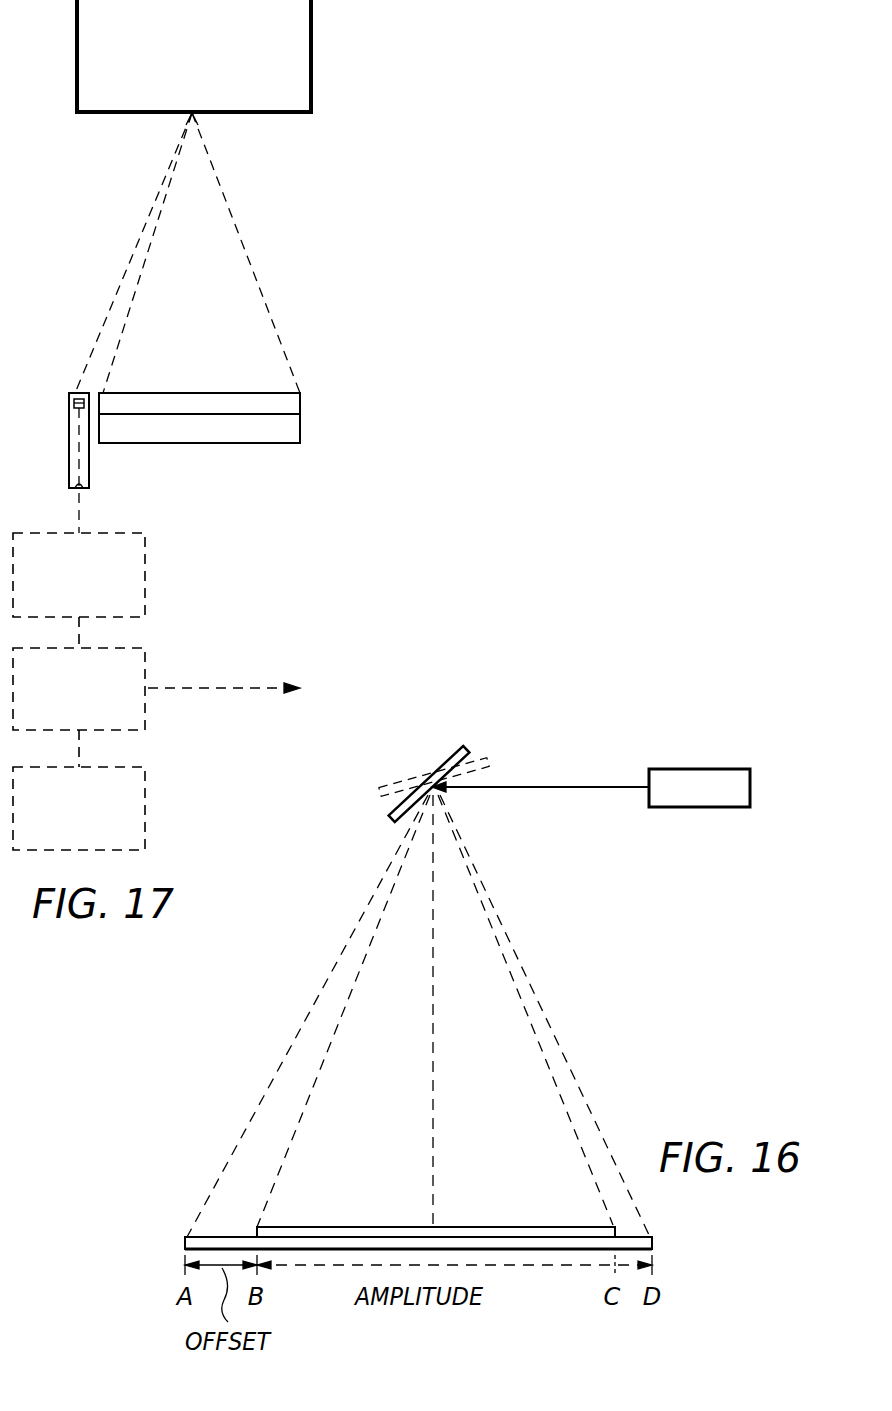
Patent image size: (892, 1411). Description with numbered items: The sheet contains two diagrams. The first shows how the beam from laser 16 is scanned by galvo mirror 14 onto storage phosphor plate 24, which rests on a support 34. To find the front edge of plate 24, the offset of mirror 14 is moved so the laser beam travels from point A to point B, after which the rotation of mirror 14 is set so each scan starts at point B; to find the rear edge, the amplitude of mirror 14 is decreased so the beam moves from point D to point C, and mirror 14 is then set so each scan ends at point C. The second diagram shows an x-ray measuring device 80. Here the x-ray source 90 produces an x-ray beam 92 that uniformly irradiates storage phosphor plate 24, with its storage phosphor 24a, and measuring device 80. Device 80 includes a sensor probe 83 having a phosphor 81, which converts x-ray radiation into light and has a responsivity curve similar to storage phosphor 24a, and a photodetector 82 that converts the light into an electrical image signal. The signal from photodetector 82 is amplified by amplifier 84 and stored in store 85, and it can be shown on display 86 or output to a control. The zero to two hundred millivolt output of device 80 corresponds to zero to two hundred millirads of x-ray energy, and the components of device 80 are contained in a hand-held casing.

In FIG. 17, the x-ray source 90 is at (312, 52).
In FIG. 17, the x-ray beam 92 is at (252, 258).
In FIG. 17, the phosphor 81 is at (77, 392).
In FIG. 17, the photodetector 82 is at (76, 412).
In FIG. 17, the sensor probe 83 is at (69, 475).
In FIG. 17, the storage phosphor 24a is at (180, 393).
In FIG. 17, the storage phosphor plate 24 is at (322, 407).
In FIG. 16, the storage phosphor plate 24 is at (497, 1227).
In FIG. 17, the measuring device 80 is at (206, 528).
In FIG. 17, the amplifier 84 is at (145, 577).
In FIG. 17, the store 85 is at (135, 648).
In FIG. 17, the display 86 is at (145, 808).
In FIG. 16, the galvo mirror 14 is at (462, 748).
In FIG. 16, the laser 16 is at (710, 768).
In FIG. 16, the support stage 34 is at (654, 1243).